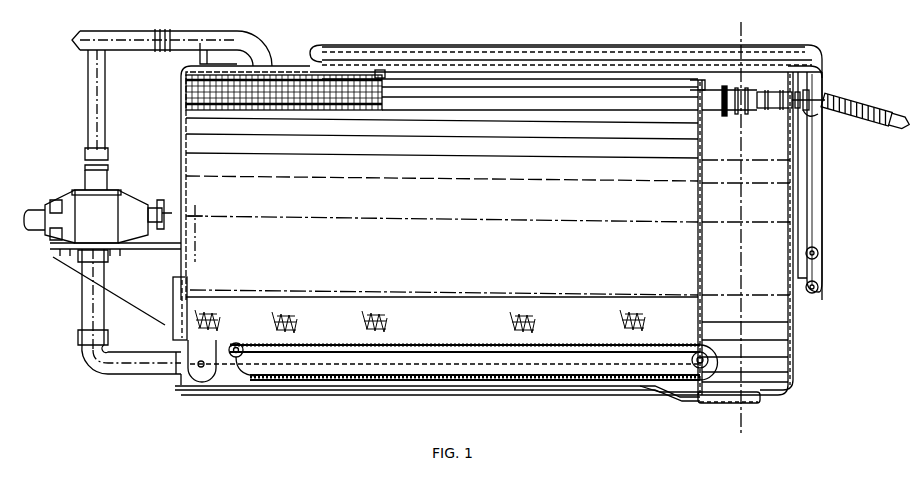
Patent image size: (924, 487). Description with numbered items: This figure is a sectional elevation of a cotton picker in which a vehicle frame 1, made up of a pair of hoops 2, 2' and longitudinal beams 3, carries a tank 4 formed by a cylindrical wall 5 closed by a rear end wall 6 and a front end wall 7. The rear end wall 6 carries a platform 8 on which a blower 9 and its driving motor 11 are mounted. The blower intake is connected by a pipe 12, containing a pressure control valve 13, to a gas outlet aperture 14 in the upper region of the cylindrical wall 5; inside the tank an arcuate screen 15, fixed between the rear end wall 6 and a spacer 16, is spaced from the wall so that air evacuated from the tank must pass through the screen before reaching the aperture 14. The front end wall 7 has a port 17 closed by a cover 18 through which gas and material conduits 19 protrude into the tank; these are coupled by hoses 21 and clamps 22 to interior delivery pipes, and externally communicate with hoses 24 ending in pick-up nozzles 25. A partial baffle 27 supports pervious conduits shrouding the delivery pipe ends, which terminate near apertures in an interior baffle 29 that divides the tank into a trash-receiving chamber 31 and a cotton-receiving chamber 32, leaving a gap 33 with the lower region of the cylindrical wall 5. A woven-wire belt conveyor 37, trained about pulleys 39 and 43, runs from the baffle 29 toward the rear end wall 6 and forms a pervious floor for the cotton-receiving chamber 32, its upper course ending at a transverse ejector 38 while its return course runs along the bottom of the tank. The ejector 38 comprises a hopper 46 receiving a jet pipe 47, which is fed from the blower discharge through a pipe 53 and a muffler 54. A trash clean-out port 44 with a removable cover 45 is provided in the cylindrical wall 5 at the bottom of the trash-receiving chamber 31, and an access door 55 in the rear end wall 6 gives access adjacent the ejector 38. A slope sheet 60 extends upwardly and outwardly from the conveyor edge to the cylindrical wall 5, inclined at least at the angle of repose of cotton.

The vehicle frame 1 is at (455, 40).
The hoop 2 is at (313, 34).
The hoop 2' is at (817, 60).
The longitudinal beam 3 is at (519, 45).
The tank 4 is at (748, 28).
The cylindrical wall 5 is at (594, 72).
The rear end wall 6 is at (181, 131).
The front end wall 7 is at (800, 177).
The platform 8 is at (55, 257).
The blower 9 is at (55, 200).
The driving motor 11 is at (108, 196).
The pipe 12 is at (88, 86).
The pressure control valve 13 is at (76, 38).
The gas outlet aperture 14 is at (278, 67).
The arcuate screen 15 is at (192, 82).
The spacer 16 is at (385, 72).
The port 17 is at (805, 86).
The cover 18 is at (810, 94).
The gas and material conduit 19 is at (815, 112).
The hose 21 is at (772, 98).
The clamp 22 is at (790, 98).
The exterior hose 24 is at (870, 115).
The pick-up nozzle 25 is at (893, 116).
The partial baffle 27 is at (746, 100).
The interior baffle 29 is at (700, 85).
The trash-receiving chamber 31 is at (746, 271).
The cotton-receiving chamber 32 is at (442, 207).
The gap 33 is at (677, 382).
The belt conveyor 37 is at (354, 356).
The ejector 38 is at (196, 384).
The conveyor pulley 39 is at (236, 357).
The conveyor pulley 43 is at (700, 352).
The trash clean-out port 44 is at (758, 401).
The removable cover 45 is at (746, 405).
The hopper 46 is at (205, 382).
The jet pipe 47 is at (178, 376).
The pipe 53 is at (117, 374).
The muffler 54 is at (82, 290).
The access door 55 is at (180, 290).
The slope sheet 60 is at (281, 296).